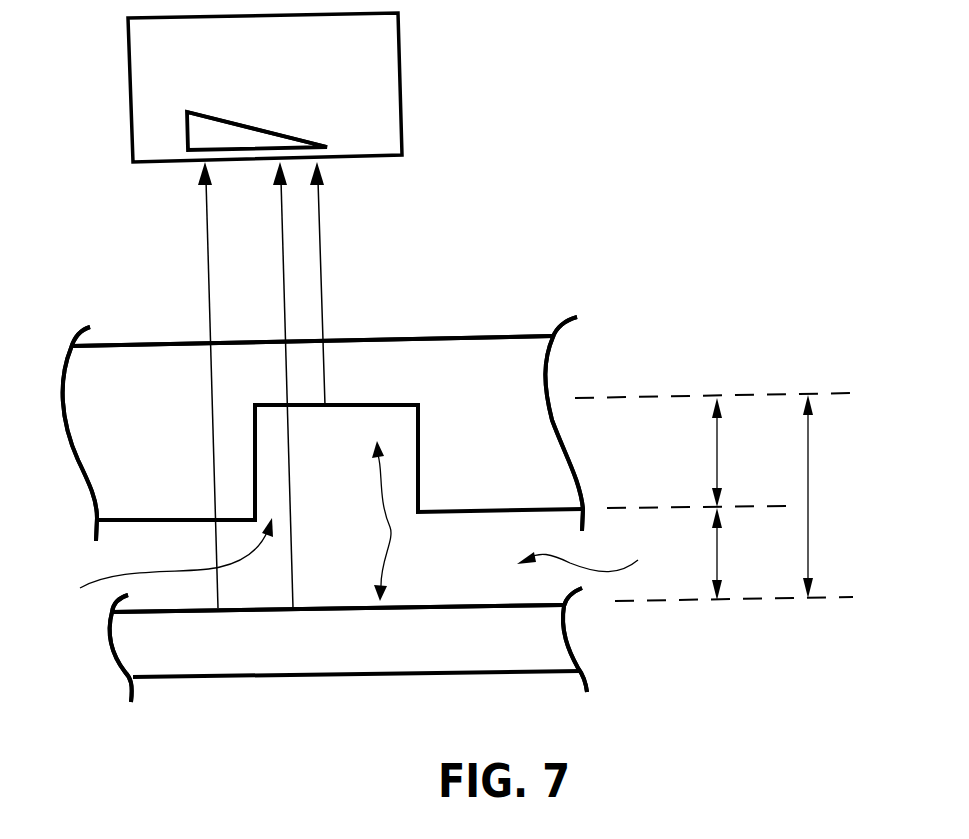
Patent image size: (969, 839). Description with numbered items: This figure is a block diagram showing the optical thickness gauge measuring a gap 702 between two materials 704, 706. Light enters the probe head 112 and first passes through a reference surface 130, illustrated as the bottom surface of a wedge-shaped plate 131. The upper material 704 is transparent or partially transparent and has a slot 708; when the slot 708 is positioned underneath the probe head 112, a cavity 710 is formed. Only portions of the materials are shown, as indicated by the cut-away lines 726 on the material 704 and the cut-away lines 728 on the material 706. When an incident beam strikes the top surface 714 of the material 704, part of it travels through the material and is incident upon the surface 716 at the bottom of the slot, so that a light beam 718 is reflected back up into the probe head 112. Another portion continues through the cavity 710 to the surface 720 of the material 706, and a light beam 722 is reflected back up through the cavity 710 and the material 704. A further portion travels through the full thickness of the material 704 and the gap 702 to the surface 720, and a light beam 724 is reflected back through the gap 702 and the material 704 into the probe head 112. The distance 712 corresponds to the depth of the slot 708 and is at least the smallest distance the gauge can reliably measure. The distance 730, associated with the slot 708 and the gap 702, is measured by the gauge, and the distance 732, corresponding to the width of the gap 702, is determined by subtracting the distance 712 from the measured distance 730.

The probe head 112 is at (386, 137).
The reference surface 130 is at (228, 147).
The wedge-shaped plate 131 is at (267, 130).
The gap 702 is at (599, 553).
The material 704 is at (562, 499).
The material 706 is at (549, 661).
The slot 708 is at (158, 570).
The cavity 710 is at (390, 527).
The distance 712 is at (714, 450).
The top surface 714 is at (433, 336).
The surface 716 is at (350, 405).
The light beam 718 is at (323, 285).
The surface 720 is at (358, 610).
The light beam 722 is at (293, 480).
The light beam 724 is at (210, 317).
The cut-away lines 726 is at (62, 420).
The cut-away lines 728 is at (115, 657).
The distance 730 is at (830, 496).
The distance 732 is at (734, 554).